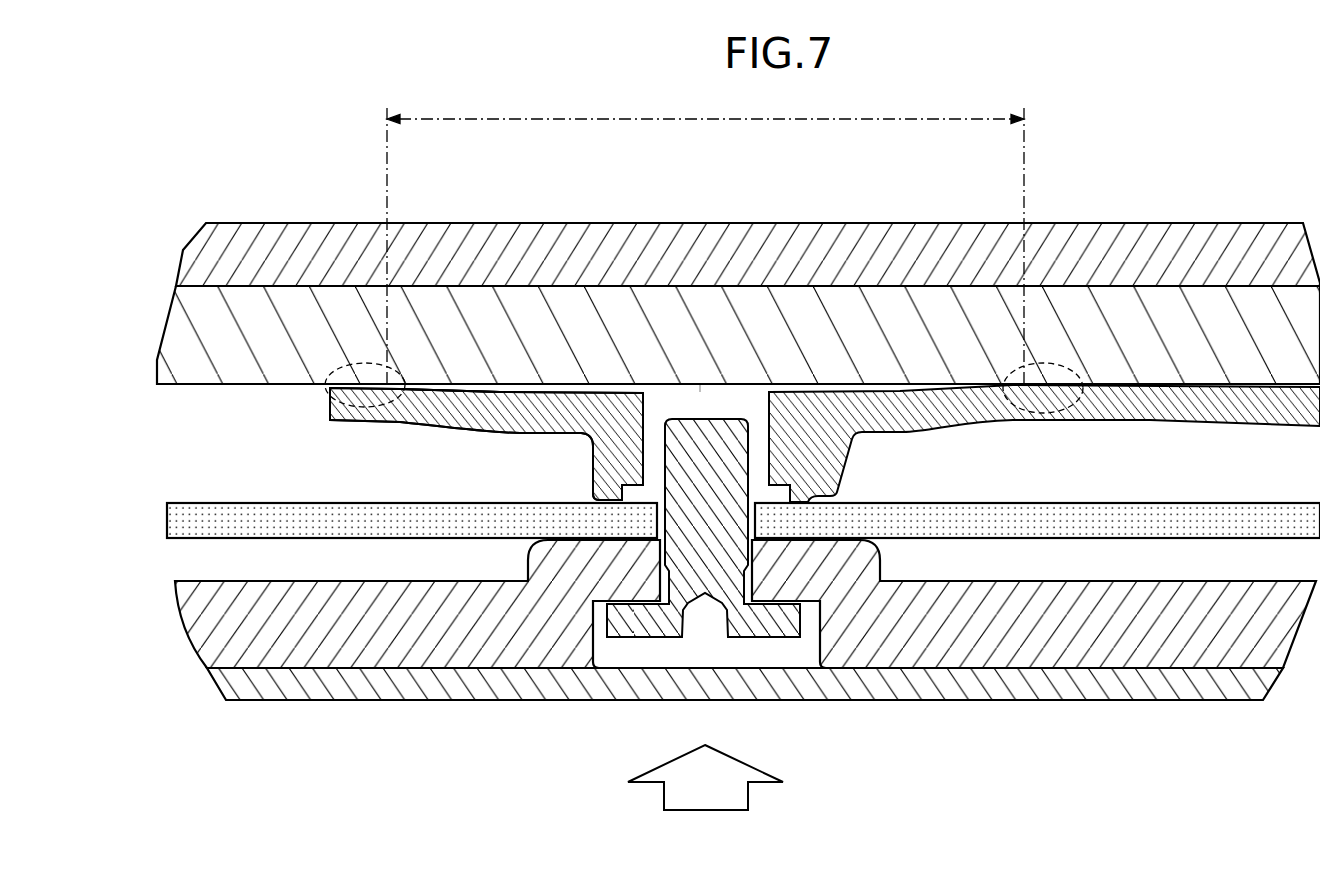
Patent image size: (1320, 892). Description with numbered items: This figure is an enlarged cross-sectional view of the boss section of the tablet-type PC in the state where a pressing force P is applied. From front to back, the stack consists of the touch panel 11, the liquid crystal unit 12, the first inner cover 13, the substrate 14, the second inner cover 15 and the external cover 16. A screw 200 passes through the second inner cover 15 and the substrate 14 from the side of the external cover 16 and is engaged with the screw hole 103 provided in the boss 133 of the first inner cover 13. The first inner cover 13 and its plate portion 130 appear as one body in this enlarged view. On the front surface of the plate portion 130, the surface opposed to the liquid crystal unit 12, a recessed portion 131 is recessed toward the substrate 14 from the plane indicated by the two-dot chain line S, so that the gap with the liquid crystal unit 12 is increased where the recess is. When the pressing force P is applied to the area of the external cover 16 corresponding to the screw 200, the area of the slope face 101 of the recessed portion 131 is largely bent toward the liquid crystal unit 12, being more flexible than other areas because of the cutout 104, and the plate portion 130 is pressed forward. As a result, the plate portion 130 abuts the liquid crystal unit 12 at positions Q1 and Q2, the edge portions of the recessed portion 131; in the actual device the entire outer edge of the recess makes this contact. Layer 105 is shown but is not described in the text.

The touch panel 11 is at (206, 253).
The liquid crystal unit 12 is at (190, 334).
The first inner cover 13 is at (330, 399).
The plate portion 130 is at (330, 409).
The boss 133 is at (603, 482).
The slope face 101 is at (473, 392).
The screw hole 103 is at (646, 408).
The cutout 104 is at (430, 417).
The adhesive layer 105 is at (475, 400).
The substrate 14 is at (183, 522).
The second inner cover 15 is at (210, 627).
The external cover 16 is at (232, 682).
The screw 200 is at (705, 562).
The pressing force P is at (705, 777).
The recessed portion 131 is at (705, 240).
The position Q1 is at (365, 363).
The position Q2 is at (1043, 363).
The two-dot chain line S is at (753, 384).